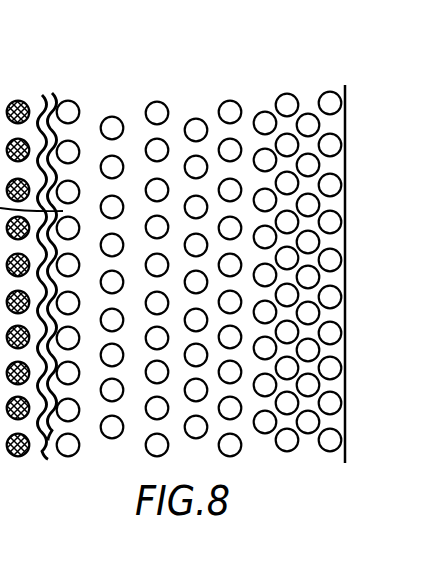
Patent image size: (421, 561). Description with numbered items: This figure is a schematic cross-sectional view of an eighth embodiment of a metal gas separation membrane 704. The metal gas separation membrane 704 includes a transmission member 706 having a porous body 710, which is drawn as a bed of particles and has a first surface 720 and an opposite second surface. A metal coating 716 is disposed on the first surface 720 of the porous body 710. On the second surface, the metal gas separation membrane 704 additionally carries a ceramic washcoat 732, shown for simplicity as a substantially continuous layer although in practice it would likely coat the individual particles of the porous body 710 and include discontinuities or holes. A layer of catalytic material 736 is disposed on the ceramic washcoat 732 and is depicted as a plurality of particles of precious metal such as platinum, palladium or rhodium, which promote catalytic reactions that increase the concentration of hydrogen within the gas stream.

The metal gas separation membrane 704 is at (148, 94).
The transmission member 706 is at (241, 94).
The porous body 710 is at (117, 112).
The metal coating 716 is at (346, 88).
The first surface 720 is at (332, 162).
The ceramic washcoat 732 is at (50, 93).
The layer of catalytic material 736 is at (5, 468).